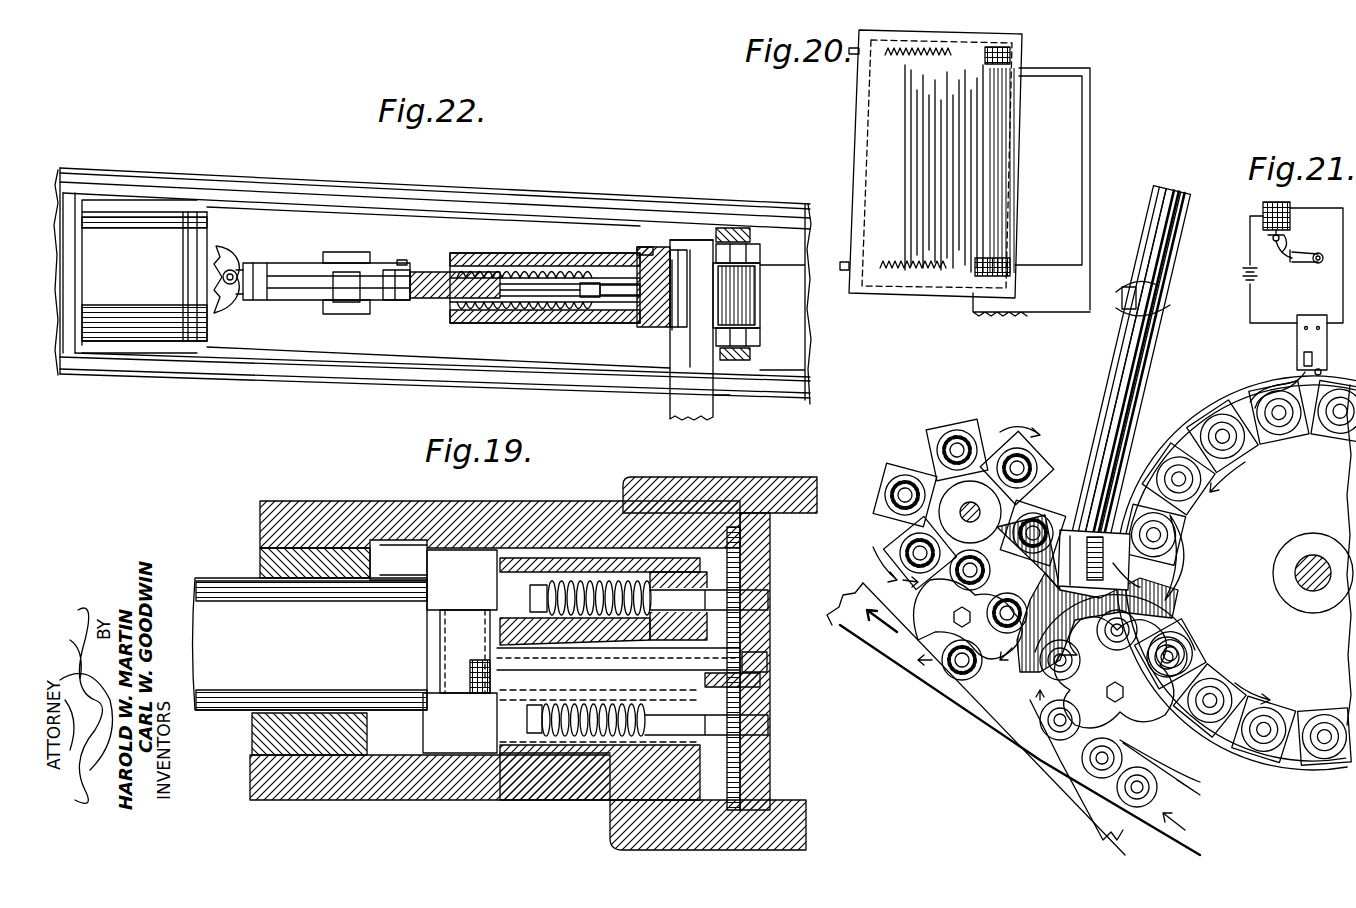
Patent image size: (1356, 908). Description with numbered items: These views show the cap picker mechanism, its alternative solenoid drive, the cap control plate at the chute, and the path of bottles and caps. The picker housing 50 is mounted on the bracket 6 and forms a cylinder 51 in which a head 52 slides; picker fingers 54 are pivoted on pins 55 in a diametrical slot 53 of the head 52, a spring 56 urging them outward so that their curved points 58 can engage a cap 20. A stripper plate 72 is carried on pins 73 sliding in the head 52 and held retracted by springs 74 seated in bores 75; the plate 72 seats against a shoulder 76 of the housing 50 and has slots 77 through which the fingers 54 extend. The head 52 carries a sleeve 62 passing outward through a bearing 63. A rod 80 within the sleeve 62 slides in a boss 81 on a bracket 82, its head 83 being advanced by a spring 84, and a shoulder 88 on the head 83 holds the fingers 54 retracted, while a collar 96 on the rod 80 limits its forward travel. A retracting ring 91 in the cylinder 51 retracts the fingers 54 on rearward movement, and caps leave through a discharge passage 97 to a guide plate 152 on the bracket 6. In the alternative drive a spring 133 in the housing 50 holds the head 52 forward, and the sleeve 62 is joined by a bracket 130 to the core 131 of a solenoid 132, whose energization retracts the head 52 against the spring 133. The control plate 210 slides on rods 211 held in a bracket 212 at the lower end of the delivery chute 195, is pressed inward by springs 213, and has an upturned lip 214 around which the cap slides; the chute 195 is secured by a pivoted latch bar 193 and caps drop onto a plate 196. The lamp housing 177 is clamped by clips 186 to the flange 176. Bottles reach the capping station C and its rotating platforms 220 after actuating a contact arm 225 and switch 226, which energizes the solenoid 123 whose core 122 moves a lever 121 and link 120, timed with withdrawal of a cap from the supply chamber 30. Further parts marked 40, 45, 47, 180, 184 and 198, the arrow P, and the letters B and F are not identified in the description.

In FIG. 22, the bracket 6 is at (603, 210).
In FIG. 22, the cap 20 is at (691, 330).
In FIG. 22, the supply chamber 30 is at (802, 265).
In FIG. 22, the coupling body 40 is at (756, 225).
In FIG. 22, the coupling end plates 45 is at (735, 228).
In FIG. 22, the coupling flanges 47 is at (750, 250).
In FIG. 22, the housing 50 is at (547, 237).
In FIG. 19, the housing 50 is at (308, 512).
In FIG. 19, the cylinder 51 is at (412, 548).
In FIG. 22, the head 52 is at (613, 270).
In FIG. 19, the head 52 is at (508, 755).
In FIG. 19, the diametrical slot 53 is at (548, 677).
In FIG. 22, the picker fingers 54 is at (620, 297).
In FIG. 19, the picker fingers 54 is at (593, 657).
In FIG. 19, the pins 55 is at (500, 653).
In FIG. 22, the spring 56 is at (641, 247).
In FIG. 19, the curved points 58 is at (764, 657).
In FIG. 22, the sleeve 62 is at (440, 303).
In FIG. 19, the sleeve 62 is at (310, 644).
In FIG. 19, the bearing 63 is at (270, 555).
In FIG. 22, the stripper plate 72 is at (680, 274).
In FIG. 19, the stripper plate 72 is at (770, 575).
In FIG. 22, the pins 73 is at (665, 345).
In FIG. 19, the pins 73 is at (770, 598).
In FIG. 19, the springs 74 is at (590, 575).
In FIG. 19, the bores 75 is at (515, 605).
In FIG. 19, the shoulder 76 is at (718, 515).
In FIG. 19, the slots 77 is at (770, 687).
In FIG. 22, the rod 80 is at (370, 267).
In FIG. 22, the boss 81 is at (343, 284).
In FIG. 22, the bracket 82 is at (357, 308).
In FIG. 22, the head 83 is at (582, 275).
In FIG. 22, the spring 84 is at (473, 255).
In FIG. 22, the shoulder 88 is at (610, 310).
In FIG. 22, the retracting ring 91 is at (668, 250).
In FIG. 19, the retracting ring 91 is at (678, 535).
In FIG. 22, the collar 96 is at (290, 283).
In FIG. 22, the discharge passage 97 is at (692, 240).
In FIG. 22, the pressure direction P is at (527, 335).
In FIG. 22, the bracket 130 is at (303, 262).
In FIG. 22, the core 131 is at (222, 292).
In FIG. 22, the solenoid 132 is at (135, 273).
In FIG. 22, the spring 133 is at (553, 313).
In FIG. 22, the guide plate 152 is at (714, 405).
In FIG. 21, the flange 176 is at (1118, 347).
In FIG. 21, the lamp housing 177 is at (1100, 396).
In FIG. 21, the rack bar rail 180 is at (1178, 223).
In FIG. 21, the rack bar direction 184 is at (1176, 188).
In FIG. 21, the clips 186 is at (1172, 292).
In FIG. 21, the latch bar 193 is at (1140, 580).
In FIG. 20, the delivery chute 195 is at (1070, 100).
In FIG. 21, the delivery chute 195 is at (1150, 568).
In FIG. 21, the plate 196 is at (1170, 540).
In FIG. 20, the bottom bracket 198 is at (993, 302).
In FIG. 20, the control plate 210 is at (903, 130).
In FIG. 20, the rods 211 is at (1007, 52).
In FIG. 21, the rods 211 is at (1012, 450).
In FIG. 20, the bracket 212 is at (937, 33).
In FIG. 21, the bracket 212 is at (1017, 680).
In FIG. 20, the springs 213 is at (900, 60).
In FIG. 20, the upturned lip 214 is at (1018, 137).
In FIG. 21, the rotating platforms 220 is at (965, 427).
In FIG. 21, the contact arm 225 is at (1273, 368).
In FIG. 21, the switch 226 is at (1303, 337).
In FIG. 21, the link 120 is at (1299, 277).
In FIG. 21, the lever 121 is at (1270, 255).
In FIG. 21, the core 122 is at (1263, 247).
In FIG. 21, the solenoid 123 is at (1265, 218).
In FIG. 21, the point B is at (1073, 549).
In FIG. 21, the capping station C is at (1161, 392).
In FIG. 21, the wheel F is at (1236, 573).